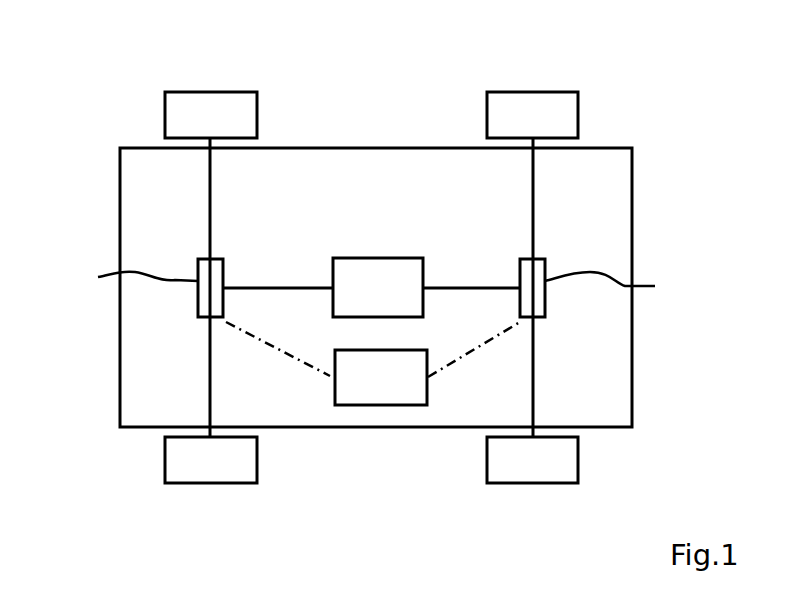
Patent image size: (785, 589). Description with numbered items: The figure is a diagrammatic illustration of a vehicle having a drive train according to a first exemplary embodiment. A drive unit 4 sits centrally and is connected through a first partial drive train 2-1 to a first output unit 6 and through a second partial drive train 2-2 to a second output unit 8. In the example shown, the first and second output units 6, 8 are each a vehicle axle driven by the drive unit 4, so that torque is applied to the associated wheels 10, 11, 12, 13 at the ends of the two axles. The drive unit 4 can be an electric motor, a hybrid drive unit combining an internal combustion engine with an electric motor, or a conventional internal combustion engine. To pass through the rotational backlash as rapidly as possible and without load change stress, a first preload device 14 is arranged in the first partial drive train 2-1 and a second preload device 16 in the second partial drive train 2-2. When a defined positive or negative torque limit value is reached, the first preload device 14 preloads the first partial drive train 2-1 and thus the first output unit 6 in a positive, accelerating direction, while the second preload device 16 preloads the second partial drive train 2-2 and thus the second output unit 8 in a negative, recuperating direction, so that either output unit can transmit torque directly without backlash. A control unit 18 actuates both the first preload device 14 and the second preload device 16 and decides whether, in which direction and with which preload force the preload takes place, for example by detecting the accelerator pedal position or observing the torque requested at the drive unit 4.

The first partial drive train 2-1 is at (276, 285).
The second partial drive train 2-2 is at (474, 283).
The drive unit 4 is at (366, 276).
The first output unit 6 is at (208, 200).
The second output unit 8 is at (533, 209).
The wheel 10 is at (202, 461).
The wheel 11 is at (216, 112).
The wheel 12 is at (532, 465).
The wheel 13 is at (527, 102).
The first preload device 14 is at (135, 288).
The second preload device 16 is at (613, 288).
The control unit 18 is at (381, 392).